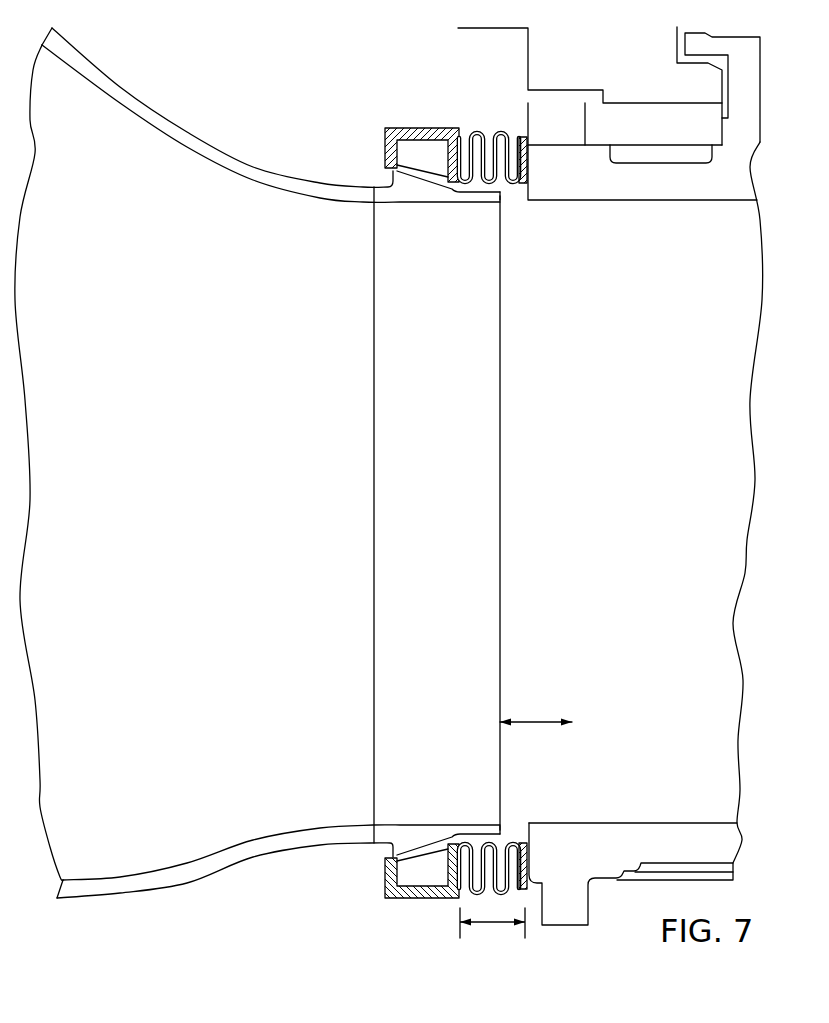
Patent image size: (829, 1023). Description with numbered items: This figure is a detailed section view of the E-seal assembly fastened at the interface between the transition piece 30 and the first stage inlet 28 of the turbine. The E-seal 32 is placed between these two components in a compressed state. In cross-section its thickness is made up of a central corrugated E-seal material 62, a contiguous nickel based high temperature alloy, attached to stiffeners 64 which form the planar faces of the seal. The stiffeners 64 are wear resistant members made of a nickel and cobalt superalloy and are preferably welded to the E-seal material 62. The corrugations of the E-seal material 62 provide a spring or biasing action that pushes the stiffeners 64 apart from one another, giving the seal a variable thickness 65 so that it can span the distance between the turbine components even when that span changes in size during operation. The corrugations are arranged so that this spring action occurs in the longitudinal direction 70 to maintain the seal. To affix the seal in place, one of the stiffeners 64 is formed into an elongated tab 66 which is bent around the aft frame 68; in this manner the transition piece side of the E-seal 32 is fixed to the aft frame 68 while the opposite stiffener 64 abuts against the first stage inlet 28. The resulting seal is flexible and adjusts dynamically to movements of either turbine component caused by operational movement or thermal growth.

The first stage inlet 28 is at (702, 572).
The transition piece 30 is at (215, 148).
The E-seal 32 is at (512, 204).
The E-seal material 62 is at (479, 133).
The stiffeners 64 is at (528, 163).
The variable thickness 65 is at (491, 923).
The elongated tab 66 is at (432, 128).
The aft frame 68 is at (397, 288).
The longitudinal direction 70 is at (535, 720).